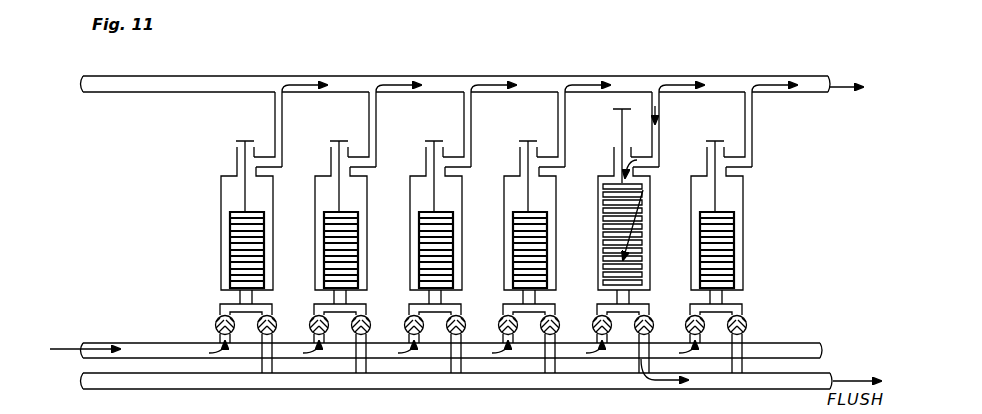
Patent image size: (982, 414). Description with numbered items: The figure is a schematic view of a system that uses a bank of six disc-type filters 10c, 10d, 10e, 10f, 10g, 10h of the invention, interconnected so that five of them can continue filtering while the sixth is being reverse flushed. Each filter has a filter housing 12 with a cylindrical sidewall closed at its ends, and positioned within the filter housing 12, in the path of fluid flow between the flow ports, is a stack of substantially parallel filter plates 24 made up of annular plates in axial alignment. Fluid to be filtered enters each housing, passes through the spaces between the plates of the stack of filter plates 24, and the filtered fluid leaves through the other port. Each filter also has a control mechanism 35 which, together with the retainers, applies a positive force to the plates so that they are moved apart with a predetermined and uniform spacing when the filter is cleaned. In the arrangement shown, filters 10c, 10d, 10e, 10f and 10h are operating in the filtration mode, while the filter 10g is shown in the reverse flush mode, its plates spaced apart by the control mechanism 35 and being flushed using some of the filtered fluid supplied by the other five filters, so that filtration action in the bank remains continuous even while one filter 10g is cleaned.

The filter 10c is at (219, 222).
The filter 10d is at (313, 222).
The filter 10e is at (408, 222).
The filter 10f is at (502, 222).
The filter 10g is at (596, 222).
The filter 10h is at (692, 222).
The filter housing 12 is at (221, 198).
The stack of filter plates 24 is at (231, 270).
The control mechanism 35 is at (239, 140).